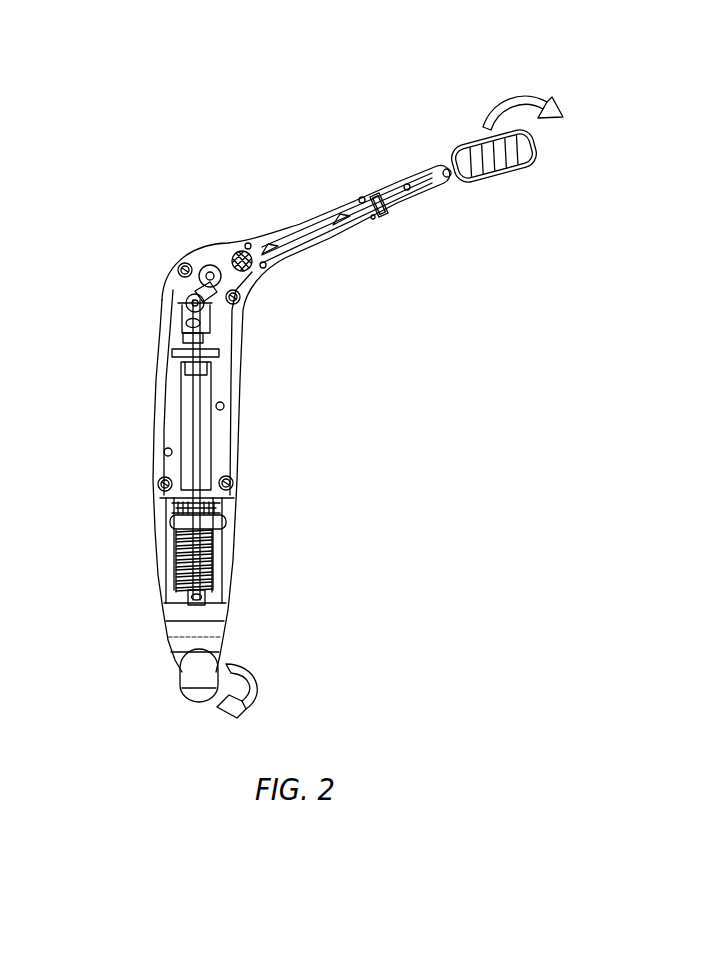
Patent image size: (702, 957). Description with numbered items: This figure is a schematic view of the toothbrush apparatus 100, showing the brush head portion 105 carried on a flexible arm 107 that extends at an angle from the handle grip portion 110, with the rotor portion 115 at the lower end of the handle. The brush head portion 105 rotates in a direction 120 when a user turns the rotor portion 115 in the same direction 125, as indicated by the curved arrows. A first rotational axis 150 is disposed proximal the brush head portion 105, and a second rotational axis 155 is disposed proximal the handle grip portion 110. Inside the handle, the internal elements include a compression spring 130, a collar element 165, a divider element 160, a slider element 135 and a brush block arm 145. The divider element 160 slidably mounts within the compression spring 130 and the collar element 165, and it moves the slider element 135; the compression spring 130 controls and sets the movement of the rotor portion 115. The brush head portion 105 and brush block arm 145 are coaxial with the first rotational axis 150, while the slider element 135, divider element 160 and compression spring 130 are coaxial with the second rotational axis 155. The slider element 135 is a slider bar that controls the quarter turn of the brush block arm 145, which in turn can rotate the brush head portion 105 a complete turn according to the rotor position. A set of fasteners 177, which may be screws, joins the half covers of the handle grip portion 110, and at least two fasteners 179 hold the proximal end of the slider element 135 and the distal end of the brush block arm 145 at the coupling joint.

The toothbrush apparatus 100 is at (98, 120).
The brush head portion 105 is at (500, 180).
The flexible arm 107 is at (345, 204).
The handle grip portion 110 is at (160, 428).
The rotor portion 115 is at (226, 627).
The direction 120 is at (510, 94).
The direction 125 is at (252, 684).
The compression spring 130 is at (224, 562).
The slider element 135 is at (214, 418).
The brush block arm 145 is at (400, 207).
The first rotational axis 150 is at (402, 183).
The second rotational axis 155 is at (200, 390).
The divider element 160 is at (224, 523).
The collar element 165 is at (178, 530).
The set of fasteners 177 is at (186, 266).
The fasteners 179 is at (237, 252).